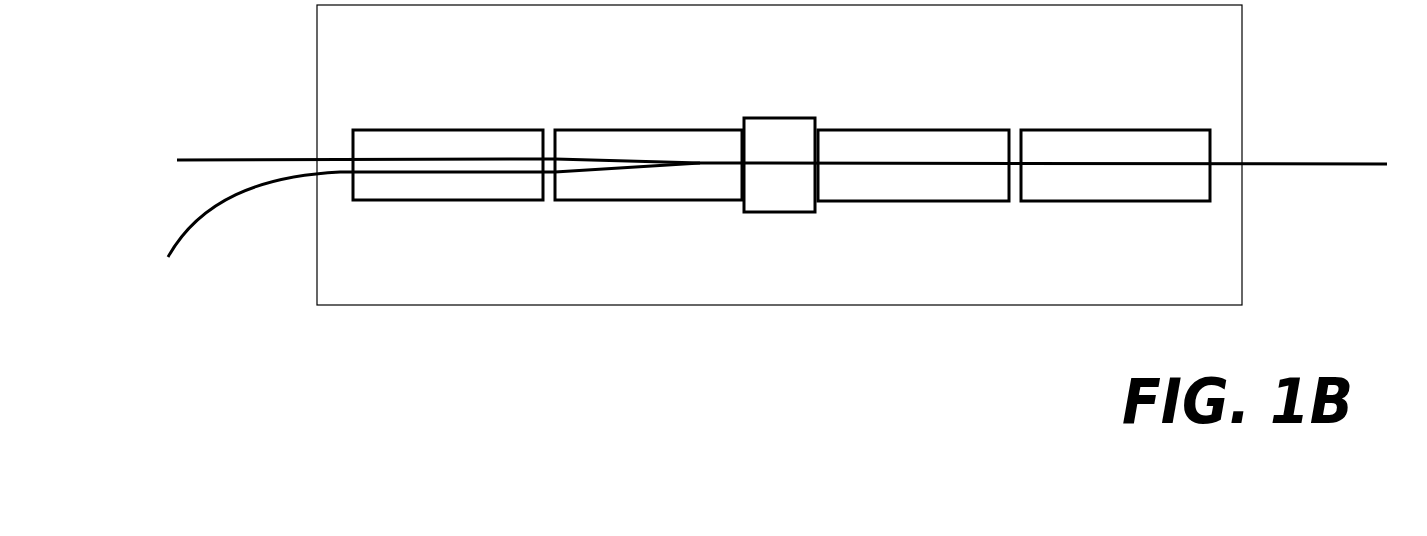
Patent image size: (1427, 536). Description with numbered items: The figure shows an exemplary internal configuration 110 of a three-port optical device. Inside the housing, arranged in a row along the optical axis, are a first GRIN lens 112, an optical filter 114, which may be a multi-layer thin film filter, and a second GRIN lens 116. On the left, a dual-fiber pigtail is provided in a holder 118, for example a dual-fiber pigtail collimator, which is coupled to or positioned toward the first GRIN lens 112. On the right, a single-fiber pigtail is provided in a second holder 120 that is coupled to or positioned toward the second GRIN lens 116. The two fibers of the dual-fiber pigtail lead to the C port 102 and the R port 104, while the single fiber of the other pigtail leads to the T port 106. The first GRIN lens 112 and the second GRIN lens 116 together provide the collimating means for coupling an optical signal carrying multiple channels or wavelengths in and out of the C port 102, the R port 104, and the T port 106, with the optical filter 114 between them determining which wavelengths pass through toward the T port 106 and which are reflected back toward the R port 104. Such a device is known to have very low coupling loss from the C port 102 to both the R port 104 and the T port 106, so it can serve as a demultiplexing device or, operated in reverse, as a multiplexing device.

The C port 102 is at (358, 123).
The R port 104 is at (434, 233).
The T port 106 is at (982, 119).
The internal configuration 110 is at (779, 155).
The first GRIN lens 112 is at (648, 128).
The optical filter 114 is at (779, 134).
The second GRIN lens 116 is at (913, 130).
The holder 118 is at (448, 130).
The second holder 120 is at (1115, 130).